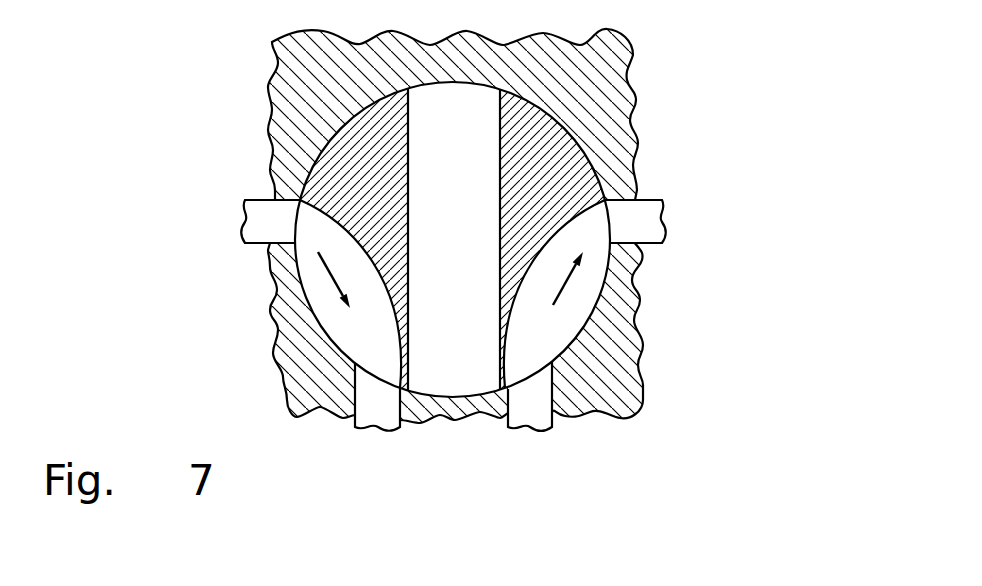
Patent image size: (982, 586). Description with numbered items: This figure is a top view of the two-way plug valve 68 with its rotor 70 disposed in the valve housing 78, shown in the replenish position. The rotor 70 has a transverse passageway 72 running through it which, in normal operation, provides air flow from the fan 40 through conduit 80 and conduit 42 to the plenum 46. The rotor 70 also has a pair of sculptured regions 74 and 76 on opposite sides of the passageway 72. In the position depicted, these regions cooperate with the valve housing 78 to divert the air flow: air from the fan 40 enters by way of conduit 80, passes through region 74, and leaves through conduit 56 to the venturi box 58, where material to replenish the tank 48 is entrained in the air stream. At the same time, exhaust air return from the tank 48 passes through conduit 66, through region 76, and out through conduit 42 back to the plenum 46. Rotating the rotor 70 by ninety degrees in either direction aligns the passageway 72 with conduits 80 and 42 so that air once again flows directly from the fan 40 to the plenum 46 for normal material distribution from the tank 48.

The fan 40 is at (208, 221).
The conduit 42 is at (641, 205).
The plenum 46 is at (678, 221).
The tank 48 is at (530, 454).
The conduit 56 is at (377, 415).
The venturi box 58 is at (378, 443).
The conduit 66 is at (534, 416).
The plug valve 68 is at (225, 377).
The rotor 70 is at (568, 143).
The transverse passageway 72 is at (470, 239).
The sculptured region 74 is at (356, 353).
The sculptured region 76 is at (517, 351).
The valve housing 78 is at (642, 373).
The conduit 80 is at (266, 205).